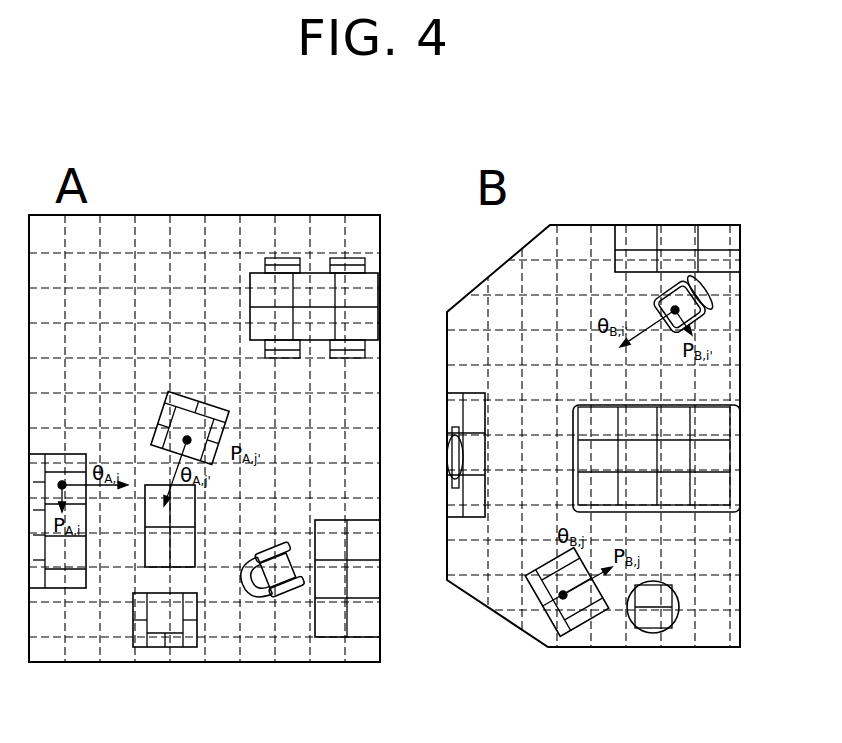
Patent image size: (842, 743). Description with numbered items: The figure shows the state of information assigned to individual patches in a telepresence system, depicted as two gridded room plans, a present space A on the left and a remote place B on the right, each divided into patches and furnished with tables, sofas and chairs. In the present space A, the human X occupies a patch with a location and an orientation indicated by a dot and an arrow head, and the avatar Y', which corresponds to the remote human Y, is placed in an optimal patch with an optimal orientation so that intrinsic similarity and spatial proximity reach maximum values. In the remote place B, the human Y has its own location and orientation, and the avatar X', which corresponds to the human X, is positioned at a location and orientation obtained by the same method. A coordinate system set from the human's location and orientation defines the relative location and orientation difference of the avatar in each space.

The human X is at (57, 509).
The avatar Y' is at (190, 419).
The avatar X' is at (656, 445).
The human Y is at (542, 592).